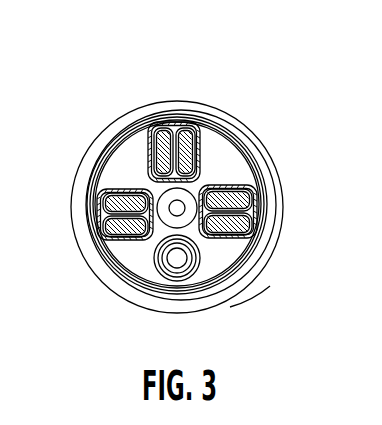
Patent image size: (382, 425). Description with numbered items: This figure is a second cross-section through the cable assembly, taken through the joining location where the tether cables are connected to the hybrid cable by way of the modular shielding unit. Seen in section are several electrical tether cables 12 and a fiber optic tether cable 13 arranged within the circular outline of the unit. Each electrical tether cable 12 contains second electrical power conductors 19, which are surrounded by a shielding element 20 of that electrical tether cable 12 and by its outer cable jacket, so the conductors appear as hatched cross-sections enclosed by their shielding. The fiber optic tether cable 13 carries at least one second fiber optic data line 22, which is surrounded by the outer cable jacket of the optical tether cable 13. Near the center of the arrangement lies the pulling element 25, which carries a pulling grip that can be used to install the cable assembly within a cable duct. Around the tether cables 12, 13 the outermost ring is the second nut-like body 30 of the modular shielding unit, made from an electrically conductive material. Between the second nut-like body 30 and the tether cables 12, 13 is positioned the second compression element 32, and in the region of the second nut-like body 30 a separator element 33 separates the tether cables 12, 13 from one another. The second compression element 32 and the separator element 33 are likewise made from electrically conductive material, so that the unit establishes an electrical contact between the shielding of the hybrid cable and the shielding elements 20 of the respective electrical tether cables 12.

The electrical tether cable 12 is at (207, 149).
The fiber optic tether cable 13 is at (204, 277).
The second electrical power conductors 19 is at (178, 123).
The shielding element 20 is at (147, 131).
The second fiber optic data line 22 is at (178, 260).
The pulling element 25 is at (179, 207).
The second nut-like body 30 is at (98, 263).
The second compression element 32 is at (110, 148).
The separator element 33 is at (110, 164).